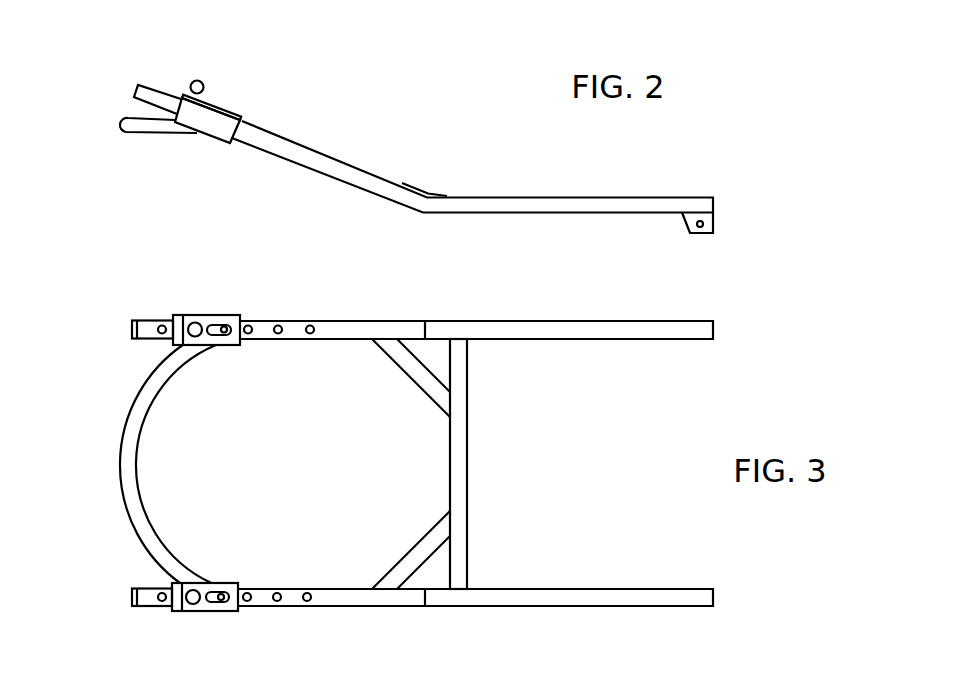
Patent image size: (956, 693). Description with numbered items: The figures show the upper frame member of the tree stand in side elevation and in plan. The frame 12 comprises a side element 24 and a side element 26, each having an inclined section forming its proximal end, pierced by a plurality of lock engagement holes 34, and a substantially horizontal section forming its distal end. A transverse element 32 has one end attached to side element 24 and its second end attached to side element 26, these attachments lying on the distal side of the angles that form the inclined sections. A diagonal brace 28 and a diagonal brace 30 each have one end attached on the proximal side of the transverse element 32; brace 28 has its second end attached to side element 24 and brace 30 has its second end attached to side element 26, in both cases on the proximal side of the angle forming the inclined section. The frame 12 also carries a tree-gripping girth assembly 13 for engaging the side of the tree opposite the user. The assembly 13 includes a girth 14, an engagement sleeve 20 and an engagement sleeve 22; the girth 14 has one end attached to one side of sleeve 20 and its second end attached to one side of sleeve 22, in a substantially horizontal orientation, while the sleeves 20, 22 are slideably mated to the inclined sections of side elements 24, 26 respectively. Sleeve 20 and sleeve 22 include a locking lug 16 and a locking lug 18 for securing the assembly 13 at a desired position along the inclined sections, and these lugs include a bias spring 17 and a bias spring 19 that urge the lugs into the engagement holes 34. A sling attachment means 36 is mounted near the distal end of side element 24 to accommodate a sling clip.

In FIG. 2, the frame 12 is at (720, 195).
In FIG. 3, the frame 12 is at (718, 591).
In FIG. 2, the tree-gripping girth assembly 13 is at (181, 81).
In FIG. 3, the tree-gripping girth assembly 13 is at (178, 384).
In FIG. 2, the girth 14 is at (124, 128).
In FIG. 3, the girth 14 is at (118, 458).
In FIG. 2, the locking lug 16 is at (205, 82).
In FIG. 3, the locking lug 16 is at (150, 624).
In FIG. 2, the bias spring 17 is at (228, 106).
In FIG. 3, the bias spring 17 is at (210, 601).
In FIG. 3, the locking lug 18 is at (193, 322).
In FIG. 3, the bias spring 19 is at (213, 324).
In FIG. 2, the engagement sleeve 20 is at (212, 142).
In FIG. 3, the engagement sleeve 20 is at (233, 622).
In FIG. 3, the engagement sleeve 22 is at (243, 312).
In FIG. 2, the side element 24 is at (330, 150).
In FIG. 3, the side element 24 is at (545, 587).
In FIG. 3, the side element 26 is at (550, 348).
In FIG. 2, the diagonal brace 28 is at (428, 187).
In FIG. 3, the diagonal brace 28 is at (393, 560).
In FIG. 3, the diagonal brace 30 is at (415, 392).
In FIG. 3, the transverse element 32 is at (468, 470).
In FIG. 3, the lock engagement holes 34 is at (302, 380).
In FIG. 2, the sling attachment means 36 is at (717, 236).